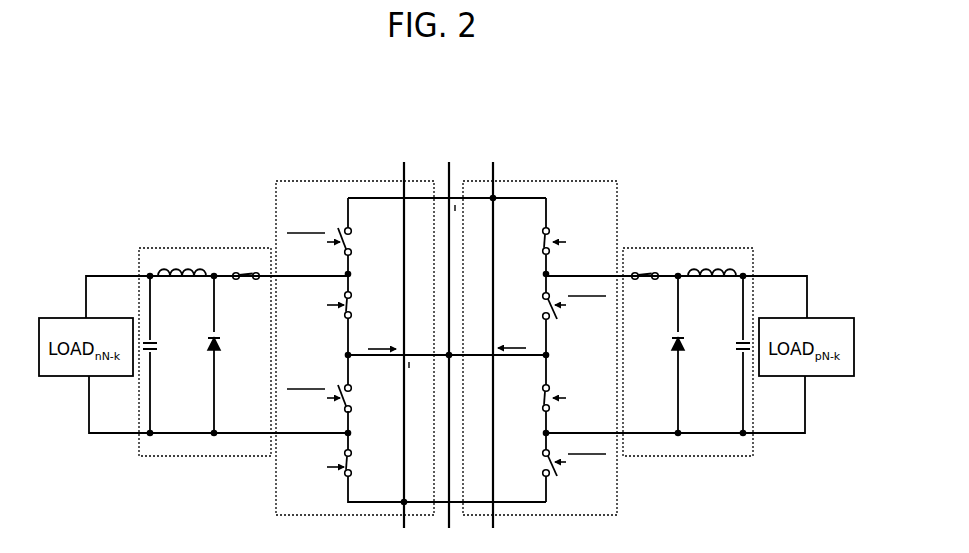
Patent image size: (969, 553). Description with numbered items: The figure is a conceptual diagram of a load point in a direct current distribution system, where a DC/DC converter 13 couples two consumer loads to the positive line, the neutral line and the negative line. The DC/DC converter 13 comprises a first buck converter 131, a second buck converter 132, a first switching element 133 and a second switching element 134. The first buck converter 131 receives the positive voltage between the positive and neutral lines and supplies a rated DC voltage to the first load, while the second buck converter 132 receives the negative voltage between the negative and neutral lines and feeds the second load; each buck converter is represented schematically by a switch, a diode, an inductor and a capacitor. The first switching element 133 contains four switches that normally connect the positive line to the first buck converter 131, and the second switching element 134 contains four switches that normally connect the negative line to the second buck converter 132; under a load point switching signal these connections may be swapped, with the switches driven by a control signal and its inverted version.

The DC/DC converter 13 is at (454, 99).
The first buck converter 131 is at (686, 248).
The second buck converter 132 is at (223, 248).
The first switching element 133 is at (563, 181).
The second switching element 134 is at (326, 181).